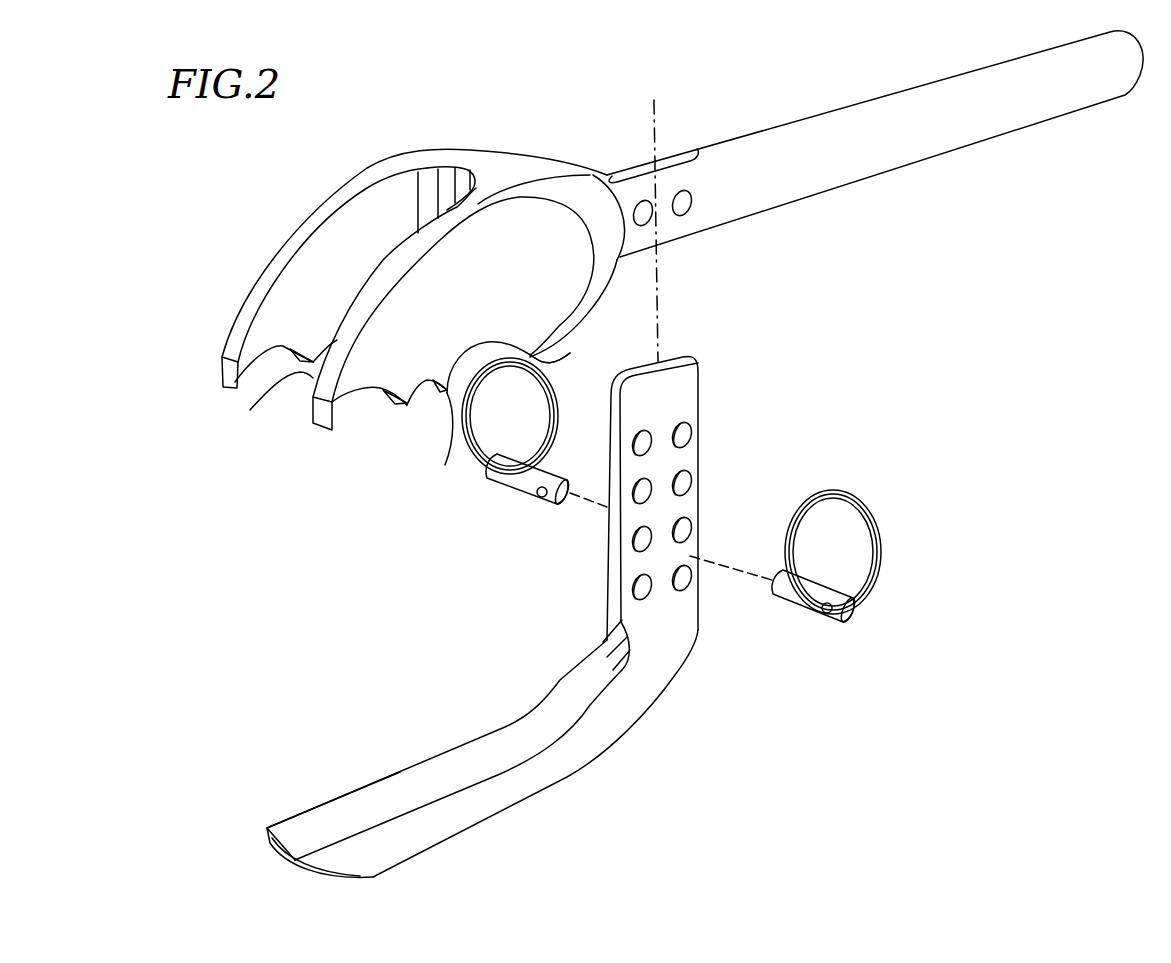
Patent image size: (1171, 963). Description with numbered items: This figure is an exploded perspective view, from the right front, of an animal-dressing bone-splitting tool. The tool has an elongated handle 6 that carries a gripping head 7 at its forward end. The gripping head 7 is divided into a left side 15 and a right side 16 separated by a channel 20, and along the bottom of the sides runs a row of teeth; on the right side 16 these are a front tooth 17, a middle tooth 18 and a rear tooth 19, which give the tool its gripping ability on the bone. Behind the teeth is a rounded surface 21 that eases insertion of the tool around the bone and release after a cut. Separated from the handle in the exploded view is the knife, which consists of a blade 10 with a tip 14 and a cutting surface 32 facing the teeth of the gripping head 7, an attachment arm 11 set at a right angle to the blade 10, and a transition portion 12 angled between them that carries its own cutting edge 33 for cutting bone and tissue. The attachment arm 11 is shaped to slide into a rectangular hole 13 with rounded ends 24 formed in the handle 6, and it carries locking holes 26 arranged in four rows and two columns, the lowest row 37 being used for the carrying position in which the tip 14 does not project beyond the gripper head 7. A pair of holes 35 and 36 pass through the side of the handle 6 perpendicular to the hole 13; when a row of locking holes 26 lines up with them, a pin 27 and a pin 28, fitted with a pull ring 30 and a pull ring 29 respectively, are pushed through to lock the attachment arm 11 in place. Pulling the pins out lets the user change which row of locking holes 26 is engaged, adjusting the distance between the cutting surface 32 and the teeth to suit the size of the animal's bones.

The handle 6 is at (1007, 123).
The gripping head 7 is at (487, 128).
The blade 10 is at (410, 835).
The attachment arm 11 is at (700, 383).
The transition portion 12 is at (557, 713).
The hole 13 is at (663, 153).
The tip 14 is at (267, 842).
The left side 15 is at (297, 250).
The right side 16 is at (250, 410).
The front tooth 17 is at (332, 430).
The middle tooth 18 is at (407, 405).
The rear tooth 19 is at (445, 465).
The channel 20 is at (400, 200).
The rounded surface 21 is at (570, 353).
The rounded ends 24 is at (615, 170).
The locking holes 26 is at (690, 486).
The pin 27 is at (797, 603).
The pin 28 is at (513, 487).
The pull ring 29 is at (556, 388).
The pull ring 30 is at (867, 490).
The cutting surface 32 is at (375, 780).
The cutting edge 33 is at (562, 680).
The hole 35 is at (647, 212).
The hole 36 is at (683, 203).
The lowest row 37 is at (690, 592).